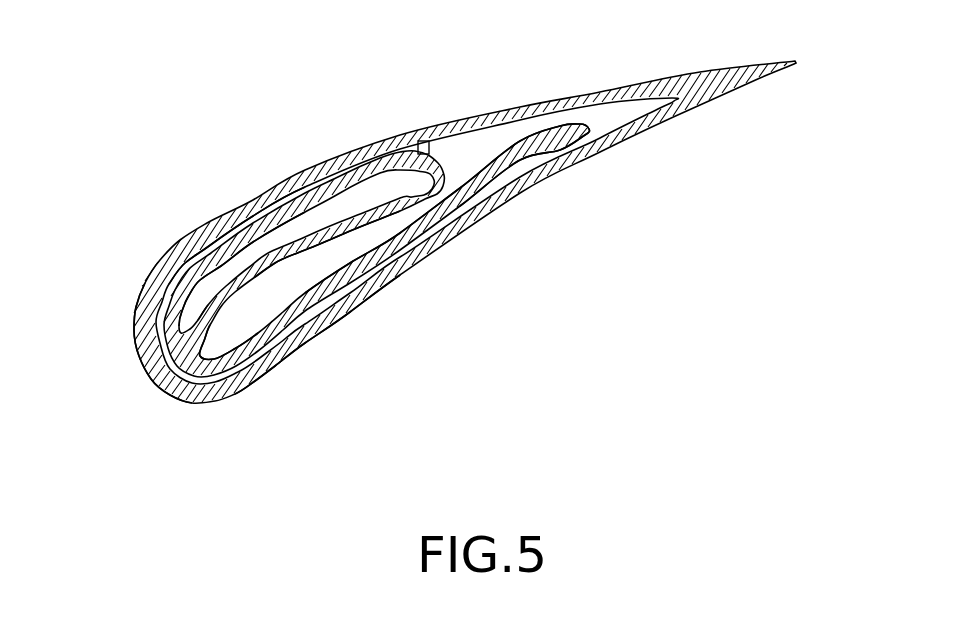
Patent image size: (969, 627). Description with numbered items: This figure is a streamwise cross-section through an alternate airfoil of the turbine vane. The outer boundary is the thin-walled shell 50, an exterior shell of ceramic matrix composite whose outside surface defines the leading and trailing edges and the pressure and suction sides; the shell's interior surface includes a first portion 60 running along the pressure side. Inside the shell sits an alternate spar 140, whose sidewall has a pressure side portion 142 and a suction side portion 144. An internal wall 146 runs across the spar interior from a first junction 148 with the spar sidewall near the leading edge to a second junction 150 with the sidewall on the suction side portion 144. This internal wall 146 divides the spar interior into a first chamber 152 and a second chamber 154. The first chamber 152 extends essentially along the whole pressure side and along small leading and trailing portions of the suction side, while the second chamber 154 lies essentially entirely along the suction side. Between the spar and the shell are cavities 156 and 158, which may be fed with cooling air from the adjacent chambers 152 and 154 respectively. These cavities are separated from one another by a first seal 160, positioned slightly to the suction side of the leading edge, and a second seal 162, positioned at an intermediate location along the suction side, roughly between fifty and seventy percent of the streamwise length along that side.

The thin-walled shell 50 is at (449, 255).
The first portion of shell interior surface 60 is at (628, 138).
The alternate spar 140 is at (335, 247).
The pressure side portion of spar sidewall 142 is at (280, 362).
The suction side portion of spar sidewall 144 is at (212, 280).
The internal wall 146 is at (283, 257).
The first junction 148 is at (176, 343).
The second junction 150 is at (436, 163).
The first chamber 152 is at (241, 332).
The second chamber 154 is at (207, 268).
The cavity 156 is at (370, 268).
The cavity 158 is at (277, 205).
The first seal 160 is at (157, 362).
The second seal 162 is at (424, 141).